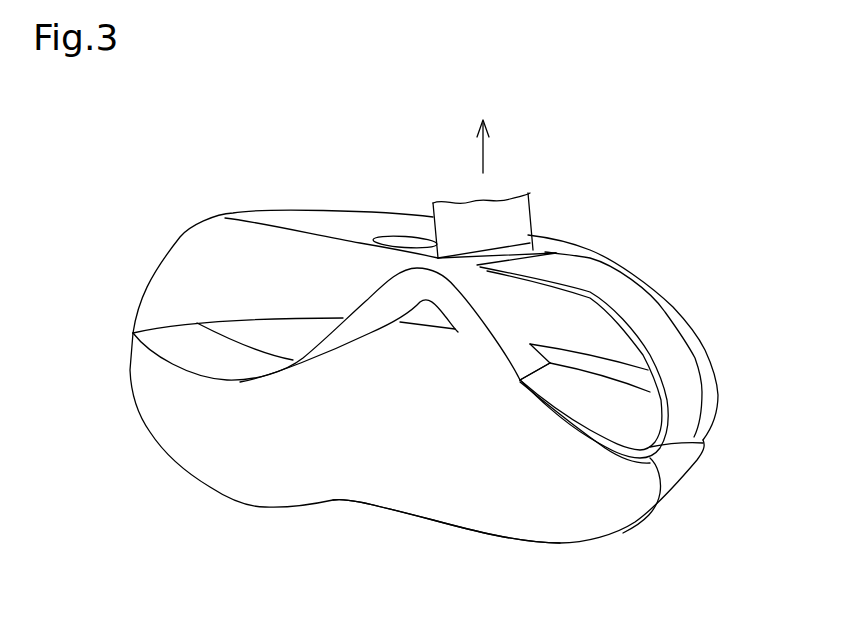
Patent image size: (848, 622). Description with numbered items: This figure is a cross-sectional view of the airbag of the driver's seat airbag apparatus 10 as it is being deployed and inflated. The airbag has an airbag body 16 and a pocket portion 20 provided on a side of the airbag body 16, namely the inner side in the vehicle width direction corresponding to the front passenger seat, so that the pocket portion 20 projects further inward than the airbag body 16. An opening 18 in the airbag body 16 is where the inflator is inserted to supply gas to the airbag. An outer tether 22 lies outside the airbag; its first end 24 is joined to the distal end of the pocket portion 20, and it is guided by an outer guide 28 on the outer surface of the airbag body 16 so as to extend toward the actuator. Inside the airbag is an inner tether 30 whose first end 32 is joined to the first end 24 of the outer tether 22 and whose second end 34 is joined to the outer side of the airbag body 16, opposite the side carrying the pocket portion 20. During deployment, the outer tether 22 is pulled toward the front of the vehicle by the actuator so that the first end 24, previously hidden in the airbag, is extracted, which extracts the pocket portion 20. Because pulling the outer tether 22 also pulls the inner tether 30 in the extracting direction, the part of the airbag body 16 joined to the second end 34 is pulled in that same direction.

The driver's seat airbag apparatus 10 is at (118, 473).
The airbag body 16 is at (318, 505).
The opening 18 is at (398, 237).
The pocket portion 20 is at (582, 390).
The outer tether 22 is at (700, 388).
The first end of the outer tether 24 is at (527, 392).
The outer guide 28 is at (538, 252).
The inner tether 30 is at (370, 333).
The first end of the inner tether 32 is at (518, 381).
The second end of the inner tether 34 is at (150, 330).